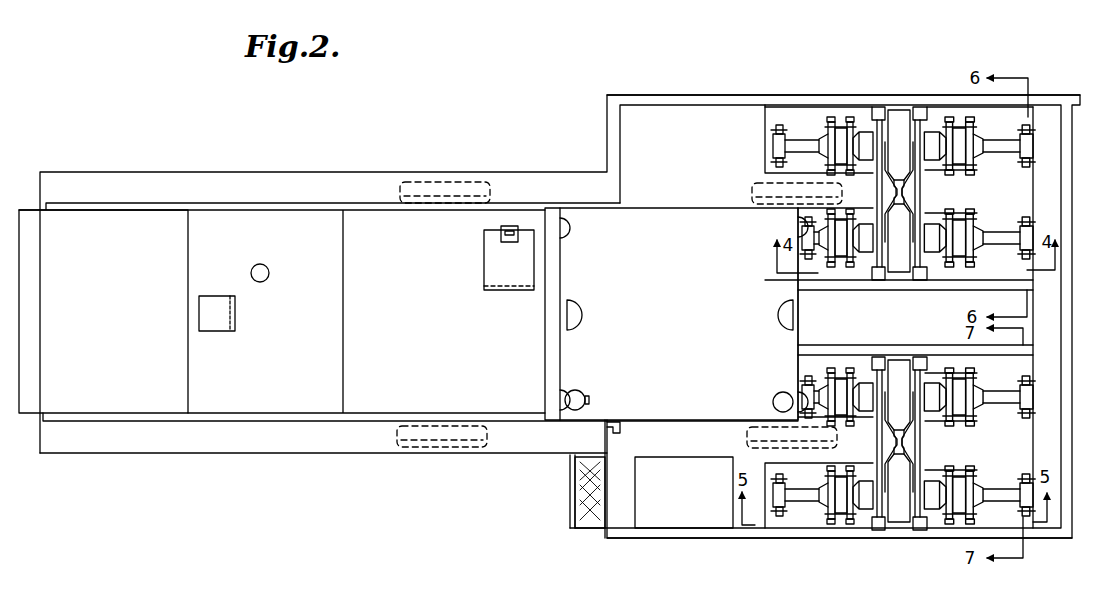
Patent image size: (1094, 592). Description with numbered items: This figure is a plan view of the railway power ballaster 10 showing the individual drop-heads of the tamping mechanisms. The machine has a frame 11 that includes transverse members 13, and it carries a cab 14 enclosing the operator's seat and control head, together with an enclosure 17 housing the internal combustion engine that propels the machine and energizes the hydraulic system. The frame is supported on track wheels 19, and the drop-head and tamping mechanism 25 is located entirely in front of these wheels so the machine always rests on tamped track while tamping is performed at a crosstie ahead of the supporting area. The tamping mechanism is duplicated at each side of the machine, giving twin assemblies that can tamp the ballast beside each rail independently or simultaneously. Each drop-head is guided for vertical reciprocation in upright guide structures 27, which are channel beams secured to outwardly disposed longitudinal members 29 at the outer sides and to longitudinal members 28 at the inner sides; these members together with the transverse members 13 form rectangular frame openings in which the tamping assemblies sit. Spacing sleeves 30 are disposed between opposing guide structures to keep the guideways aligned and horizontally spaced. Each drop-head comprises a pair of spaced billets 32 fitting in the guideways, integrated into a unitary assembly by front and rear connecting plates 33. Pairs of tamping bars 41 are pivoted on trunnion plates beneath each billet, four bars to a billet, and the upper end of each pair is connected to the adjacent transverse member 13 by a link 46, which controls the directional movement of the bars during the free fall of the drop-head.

The railway power ballaster 10 is at (548, 174).
The frame 11 is at (358, 457).
The transverse members 13 is at (1044, 115).
The cab 14 is at (600, 405).
The enclosure 17 is at (107, 218).
The track wheels 19 is at (437, 206).
The drop-head and tamping mechanism 25 is at (866, 111).
The upright guide structures 27 is at (933, 108).
The longitudinal members 28 is at (843, 283).
The longitudinal members 29 is at (703, 97).
The spacing sleeves 30 is at (922, 197).
The billets 32 is at (899, 112).
The connecting plates 33 is at (890, 178).
The tamping bars 41 is at (842, 124).
The link 46 is at (793, 140).